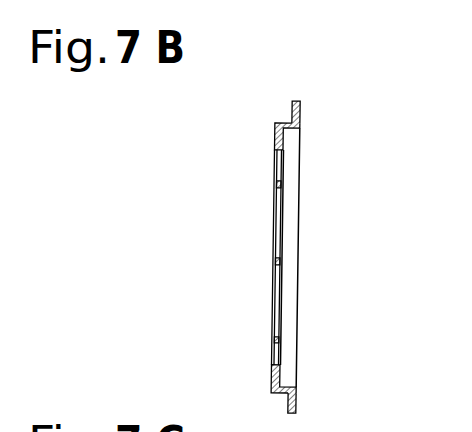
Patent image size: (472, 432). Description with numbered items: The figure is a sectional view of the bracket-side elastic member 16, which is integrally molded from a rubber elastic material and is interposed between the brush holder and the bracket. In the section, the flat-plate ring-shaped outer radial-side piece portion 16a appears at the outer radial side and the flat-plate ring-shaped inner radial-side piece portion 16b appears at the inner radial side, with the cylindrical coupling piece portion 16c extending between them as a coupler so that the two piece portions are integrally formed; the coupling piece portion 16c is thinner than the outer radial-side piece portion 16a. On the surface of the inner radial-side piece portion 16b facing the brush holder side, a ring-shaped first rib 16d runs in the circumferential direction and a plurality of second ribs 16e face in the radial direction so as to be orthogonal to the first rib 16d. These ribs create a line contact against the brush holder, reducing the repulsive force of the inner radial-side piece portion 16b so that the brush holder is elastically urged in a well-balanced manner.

The bracket-side elastic member 16 is at (253, 148).
The outer radial-side piece portion 16a is at (299, 113).
The inner radial-side piece portion 16b is at (272, 376).
The coupling piece portion 16c is at (299, 126).
The first rib 16d is at (277, 231).
The second ribs 16e is at (284, 185).